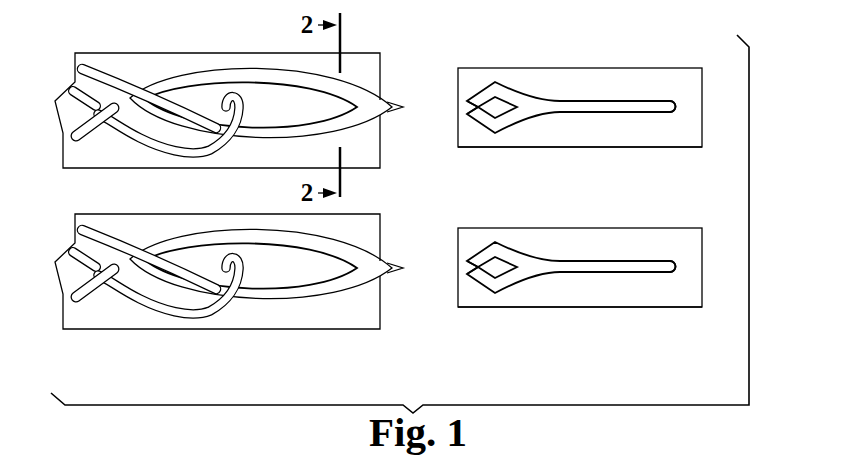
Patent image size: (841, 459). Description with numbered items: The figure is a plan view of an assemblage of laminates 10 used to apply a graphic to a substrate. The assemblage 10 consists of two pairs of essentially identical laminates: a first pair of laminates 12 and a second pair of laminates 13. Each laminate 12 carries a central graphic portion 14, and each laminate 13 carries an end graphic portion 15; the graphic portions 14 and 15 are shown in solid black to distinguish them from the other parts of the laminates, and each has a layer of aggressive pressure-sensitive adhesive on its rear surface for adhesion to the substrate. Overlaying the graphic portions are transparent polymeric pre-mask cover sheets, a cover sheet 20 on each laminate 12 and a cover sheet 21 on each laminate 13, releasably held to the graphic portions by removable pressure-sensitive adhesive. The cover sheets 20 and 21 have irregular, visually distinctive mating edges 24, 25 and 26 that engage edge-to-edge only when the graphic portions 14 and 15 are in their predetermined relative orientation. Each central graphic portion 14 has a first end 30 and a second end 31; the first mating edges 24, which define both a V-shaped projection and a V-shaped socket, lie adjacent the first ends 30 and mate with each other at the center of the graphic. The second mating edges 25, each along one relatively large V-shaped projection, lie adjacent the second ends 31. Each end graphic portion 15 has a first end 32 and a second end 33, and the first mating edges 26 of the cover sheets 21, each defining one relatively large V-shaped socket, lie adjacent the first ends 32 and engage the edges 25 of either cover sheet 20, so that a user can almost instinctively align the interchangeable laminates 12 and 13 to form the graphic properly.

The assemblage of laminates 10 is at (616, 355).
The first pair of laminates 12 is at (203, 46).
The second pair of laminates 13 is at (658, 63).
The central graphic portion 14 is at (277, 136).
The end graphic portion 15 is at (607, 115).
The cover sheet 20 is at (227, 161).
The cover sheet 21 is at (563, 139).
The first irregular mating edge 24 is at (75, 118).
The second irregular mating edge 25 is at (389, 112).
The first irregular mating edge 26 is at (466, 105).
The first end 30 is at (72, 84).
The second end 31 is at (386, 102).
The first end 32 is at (472, 121).
The second end 33 is at (676, 108).